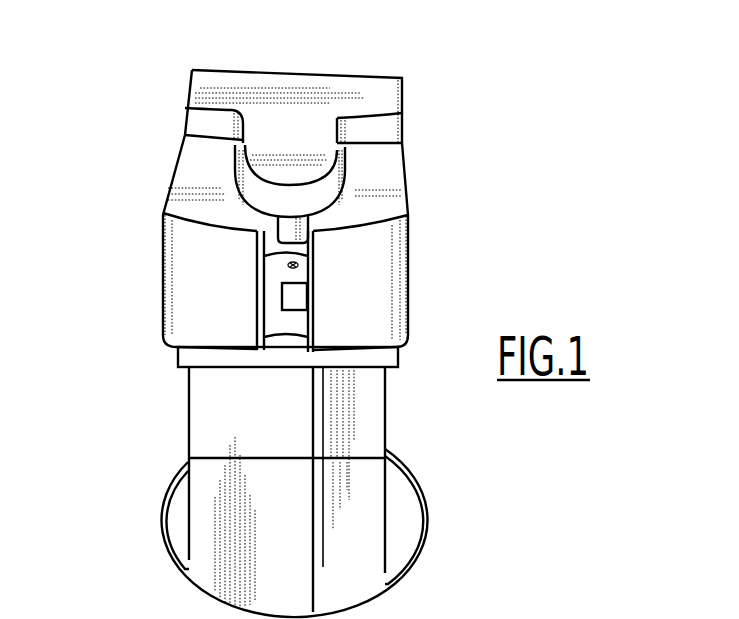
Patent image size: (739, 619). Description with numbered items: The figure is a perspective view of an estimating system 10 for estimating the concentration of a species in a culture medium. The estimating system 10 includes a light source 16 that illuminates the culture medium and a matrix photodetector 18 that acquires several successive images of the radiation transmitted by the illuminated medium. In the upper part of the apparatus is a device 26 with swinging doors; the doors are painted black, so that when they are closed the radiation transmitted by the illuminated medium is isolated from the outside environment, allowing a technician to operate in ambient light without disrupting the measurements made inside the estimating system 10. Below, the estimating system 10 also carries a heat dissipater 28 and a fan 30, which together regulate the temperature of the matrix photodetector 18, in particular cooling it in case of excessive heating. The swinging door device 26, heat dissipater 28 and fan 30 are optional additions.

The estimating system 10 is at (302, 312).
The light source 16 is at (288, 150).
The matrix photodetector 18 is at (298, 297).
The swinging door device 26 is at (214, 283).
The heat dissipater 28 is at (266, 403).
The fan 30 is at (281, 493).